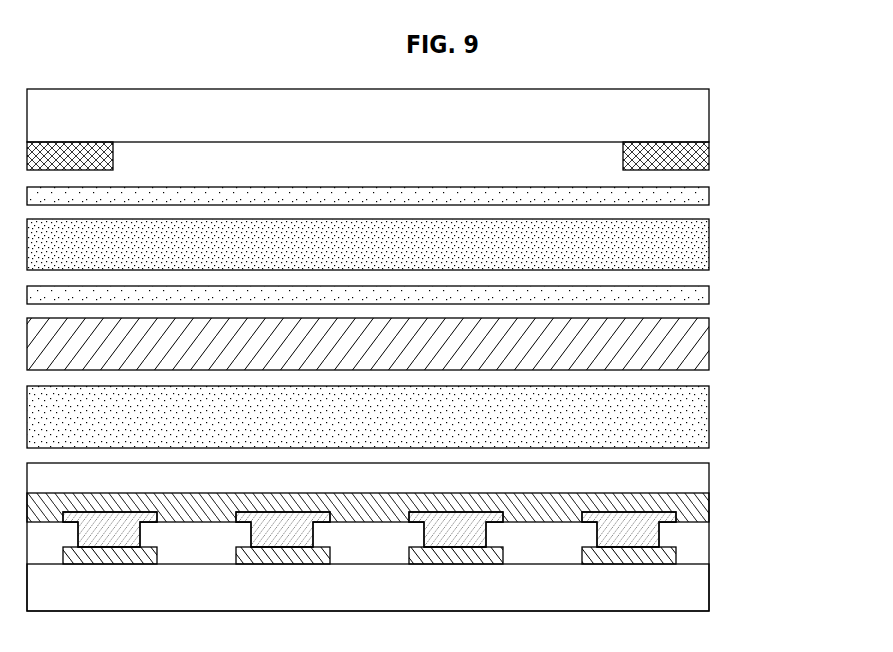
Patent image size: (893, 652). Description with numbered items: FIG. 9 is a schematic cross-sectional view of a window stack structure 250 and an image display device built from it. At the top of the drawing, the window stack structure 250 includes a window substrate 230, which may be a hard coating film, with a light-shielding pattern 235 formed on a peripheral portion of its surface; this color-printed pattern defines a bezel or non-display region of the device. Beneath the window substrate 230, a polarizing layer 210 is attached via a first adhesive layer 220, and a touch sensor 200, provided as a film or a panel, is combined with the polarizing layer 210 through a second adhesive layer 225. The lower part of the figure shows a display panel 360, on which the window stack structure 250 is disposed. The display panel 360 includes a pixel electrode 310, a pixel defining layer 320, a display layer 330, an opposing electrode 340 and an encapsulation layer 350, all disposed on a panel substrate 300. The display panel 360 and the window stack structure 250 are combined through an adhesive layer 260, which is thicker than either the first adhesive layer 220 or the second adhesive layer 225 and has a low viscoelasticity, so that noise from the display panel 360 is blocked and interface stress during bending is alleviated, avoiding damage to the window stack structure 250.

The touch sensor 200 is at (705, 338).
The polarizing layer 210 is at (705, 243).
The first adhesive layer 220 is at (709, 192).
The second adhesive layer 225 is at (709, 292).
The window substrate 230 is at (705, 117).
The light-shielding pattern 235 is at (709, 151).
The window stack structure 250 is at (811, 110).
The adhesive layer 260 is at (705, 413).
The panel substrate 300 is at (703, 590).
The pixel electrode 310 is at (673, 550).
The pixel defining layer 320 is at (703, 533).
The display layer 330 is at (638, 517).
The opposing electrode 340 is at (702, 505).
The encapsulation layer 350 is at (710, 476).
The display panel 360 is at (811, 448).